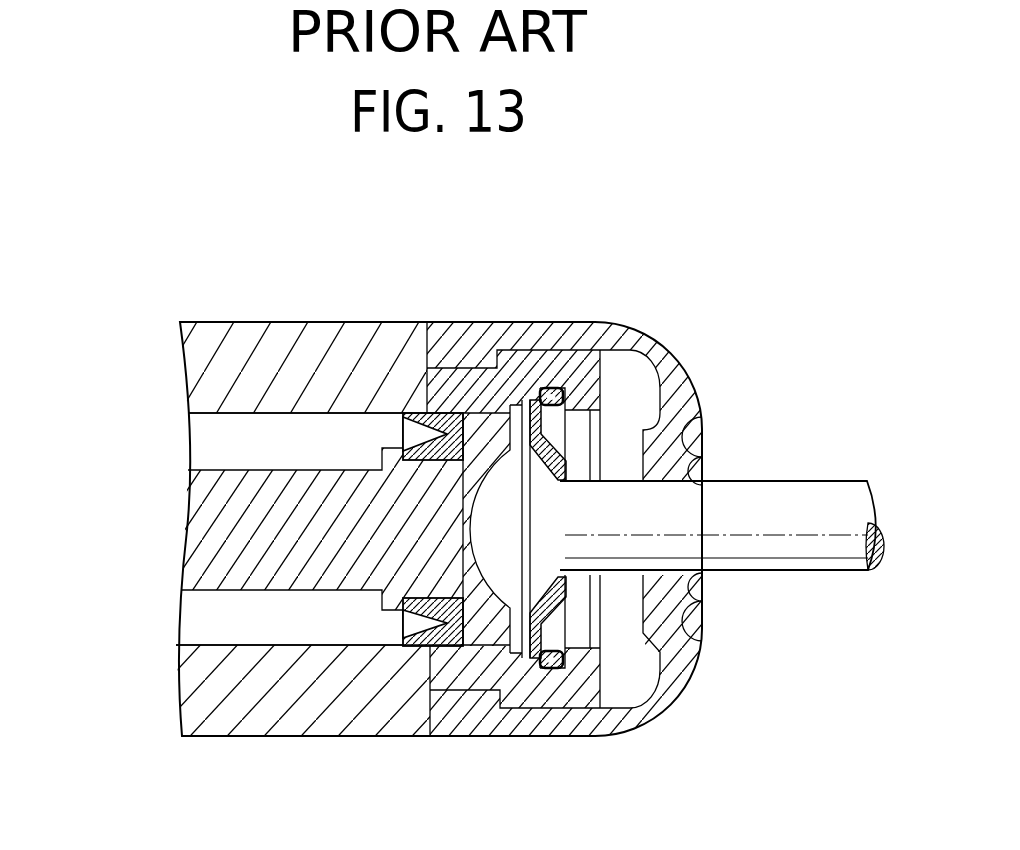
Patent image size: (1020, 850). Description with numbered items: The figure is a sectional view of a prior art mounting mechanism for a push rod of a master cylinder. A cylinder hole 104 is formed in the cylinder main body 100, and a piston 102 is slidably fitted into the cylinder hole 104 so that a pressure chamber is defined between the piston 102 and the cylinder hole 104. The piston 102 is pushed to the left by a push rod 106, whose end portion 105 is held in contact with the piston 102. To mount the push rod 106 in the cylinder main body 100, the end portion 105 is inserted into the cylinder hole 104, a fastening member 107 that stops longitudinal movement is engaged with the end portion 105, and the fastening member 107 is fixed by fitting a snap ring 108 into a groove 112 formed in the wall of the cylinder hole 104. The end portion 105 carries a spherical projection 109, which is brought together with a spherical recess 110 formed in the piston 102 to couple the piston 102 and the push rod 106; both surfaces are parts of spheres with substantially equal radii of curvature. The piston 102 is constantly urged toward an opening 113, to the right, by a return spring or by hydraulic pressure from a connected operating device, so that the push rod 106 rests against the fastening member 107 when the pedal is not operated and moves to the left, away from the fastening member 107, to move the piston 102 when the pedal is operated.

The cylinder main body 100 is at (263, 705).
The piston 102 is at (255, 545).
The cylinder hole 104 is at (254, 644).
The end portion 105 is at (503, 507).
The push rod 106 is at (812, 560).
The fastening member 107 is at (565, 412).
The snap ring 108 is at (552, 388).
The spherical projection 109 is at (545, 567).
The spherical recess 110 is at (495, 570).
The groove 112 is at (548, 670).
The opening 113 is at (607, 452).